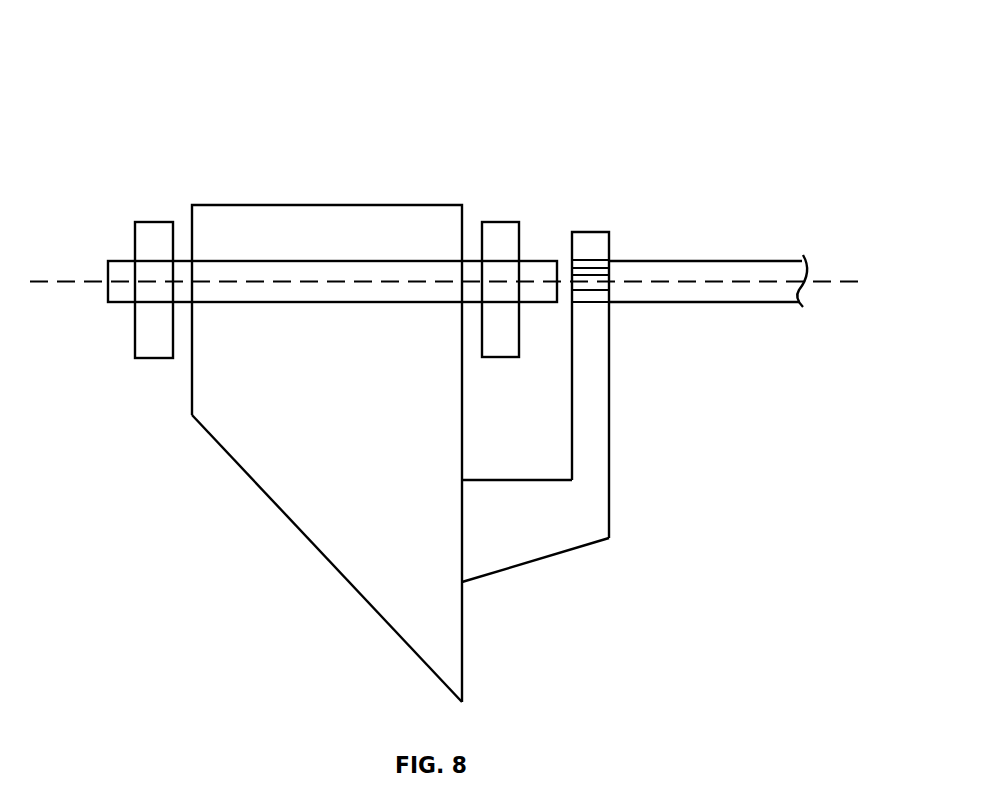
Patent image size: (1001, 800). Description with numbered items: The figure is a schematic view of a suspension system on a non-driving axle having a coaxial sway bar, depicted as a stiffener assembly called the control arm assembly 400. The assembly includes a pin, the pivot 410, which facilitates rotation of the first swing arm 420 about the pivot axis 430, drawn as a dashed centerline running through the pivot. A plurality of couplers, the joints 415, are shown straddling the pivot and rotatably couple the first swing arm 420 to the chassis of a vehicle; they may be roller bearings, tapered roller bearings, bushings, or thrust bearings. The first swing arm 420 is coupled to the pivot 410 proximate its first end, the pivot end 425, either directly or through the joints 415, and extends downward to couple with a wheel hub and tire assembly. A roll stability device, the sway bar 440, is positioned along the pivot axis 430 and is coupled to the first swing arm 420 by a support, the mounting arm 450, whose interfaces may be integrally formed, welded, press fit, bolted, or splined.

The control arm assembly 400 is at (157, 64).
The pivot 410 is at (290, 268).
The joints 415 is at (155, 232).
The first swing arm 420 is at (229, 438).
The pivot end 425 is at (261, 200).
The pivot axis 430 is at (90, 280).
The sway bar 440 is at (662, 268).
The mounting arm 450 is at (597, 505).